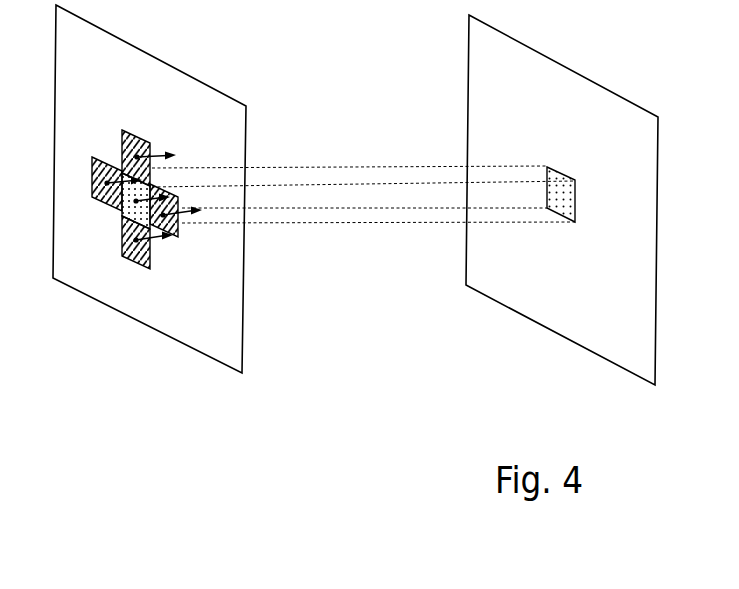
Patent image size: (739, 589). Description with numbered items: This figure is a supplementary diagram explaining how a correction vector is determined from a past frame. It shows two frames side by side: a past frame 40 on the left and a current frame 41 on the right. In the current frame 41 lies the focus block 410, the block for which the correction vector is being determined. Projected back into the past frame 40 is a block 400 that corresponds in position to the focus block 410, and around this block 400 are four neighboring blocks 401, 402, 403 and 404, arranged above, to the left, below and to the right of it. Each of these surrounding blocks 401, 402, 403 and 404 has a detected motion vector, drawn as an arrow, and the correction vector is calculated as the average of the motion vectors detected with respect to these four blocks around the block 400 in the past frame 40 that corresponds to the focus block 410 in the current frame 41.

The past frame 40 is at (108, 308).
The current frame 41 is at (522, 317).
The block 400 is at (119, 206).
The block 401 is at (128, 130).
The block 402 is at (93, 165).
The block 403 is at (121, 246).
The block 404 is at (180, 235).
The focus block 410 is at (548, 168).